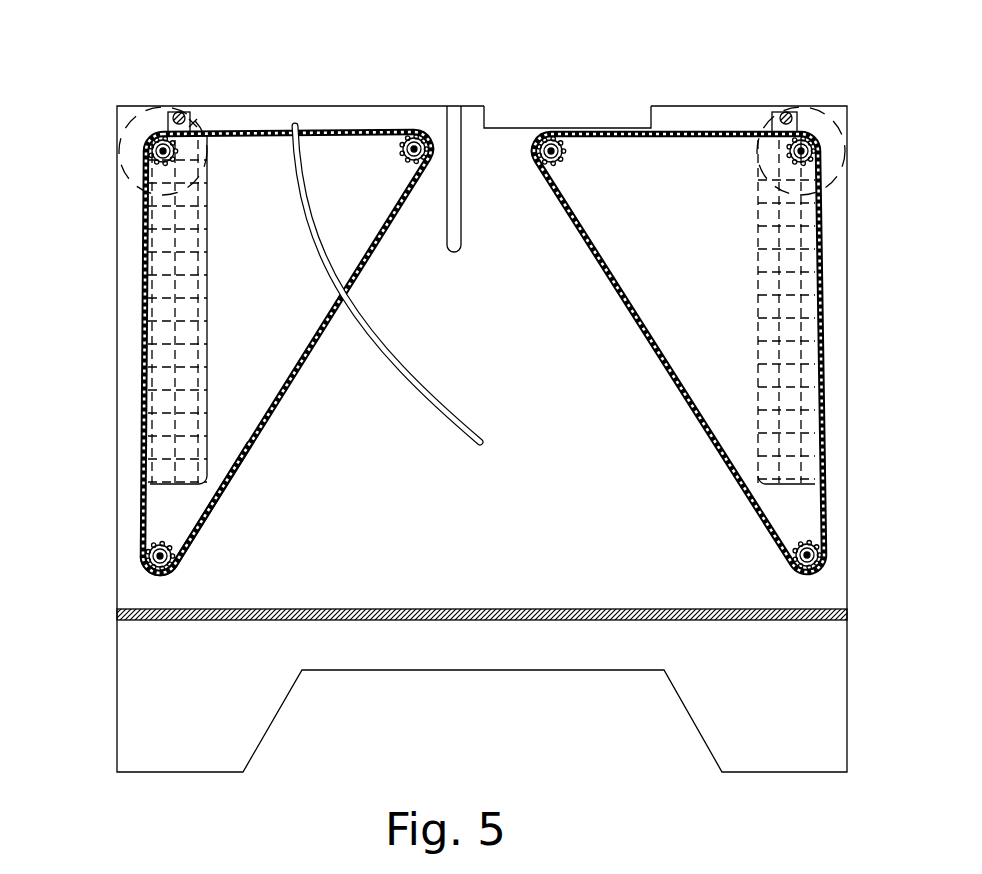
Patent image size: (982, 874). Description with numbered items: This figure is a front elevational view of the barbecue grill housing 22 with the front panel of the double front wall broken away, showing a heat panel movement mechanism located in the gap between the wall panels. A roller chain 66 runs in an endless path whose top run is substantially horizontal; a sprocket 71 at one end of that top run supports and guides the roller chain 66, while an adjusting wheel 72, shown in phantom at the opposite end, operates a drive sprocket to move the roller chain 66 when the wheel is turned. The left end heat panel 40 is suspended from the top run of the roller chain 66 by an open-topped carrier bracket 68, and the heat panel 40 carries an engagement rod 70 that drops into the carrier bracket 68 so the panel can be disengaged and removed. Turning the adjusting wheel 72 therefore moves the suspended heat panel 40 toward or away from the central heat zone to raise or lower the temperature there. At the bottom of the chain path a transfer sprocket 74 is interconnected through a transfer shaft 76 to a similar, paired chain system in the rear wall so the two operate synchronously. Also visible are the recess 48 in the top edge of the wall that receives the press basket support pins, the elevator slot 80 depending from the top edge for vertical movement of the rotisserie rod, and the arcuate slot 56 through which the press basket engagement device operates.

The housing 22 is at (405, 108).
The recess 48 is at (505, 126).
The elevator slot 80 is at (462, 236).
The heat panel 40 is at (200, 282).
The adjusting wheel 72 is at (121, 146).
The carrier bracket 68 is at (195, 124).
The engagement rod 70 is at (180, 110).
The roller chain 66 is at (364, 281).
The transfer sprocket 74 is at (190, 546).
The sprocket 71 is at (400, 153).
The transfer shaft 76 is at (150, 555).
The arcuate slot 56 is at (425, 402).